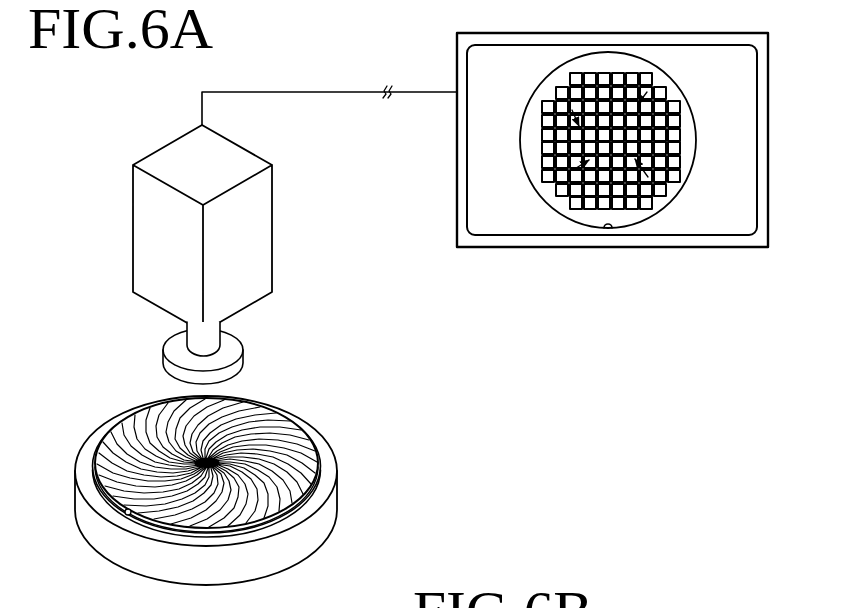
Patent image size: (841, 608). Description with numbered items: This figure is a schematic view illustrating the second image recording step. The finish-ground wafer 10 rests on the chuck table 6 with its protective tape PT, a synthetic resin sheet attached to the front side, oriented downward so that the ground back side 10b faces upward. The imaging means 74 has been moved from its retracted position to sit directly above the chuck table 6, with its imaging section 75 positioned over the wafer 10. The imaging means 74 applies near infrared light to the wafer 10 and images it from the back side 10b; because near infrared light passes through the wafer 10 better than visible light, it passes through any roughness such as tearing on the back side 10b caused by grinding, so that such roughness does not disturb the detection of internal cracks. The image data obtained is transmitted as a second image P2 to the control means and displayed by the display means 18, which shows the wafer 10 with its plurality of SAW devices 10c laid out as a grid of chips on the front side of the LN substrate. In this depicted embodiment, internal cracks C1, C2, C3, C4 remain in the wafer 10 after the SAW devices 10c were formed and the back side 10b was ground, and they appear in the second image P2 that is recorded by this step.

The chuck table 6 is at (100, 560).
The wafer 10 is at (425, 292).
The back side 10b is at (305, 477).
The SAW devices 10c is at (672, 132).
The display means 18 is at (555, 249).
The imaging means 74 is at (130, 206).
The imaging section 75 is at (158, 335).
The protective tape PT is at (253, 536).
The internal crack C1 is at (560, 95).
The internal crack C2 is at (640, 97).
The internal crack C3 is at (643, 182).
The internal crack C4 is at (568, 173).
The second image P2 is at (702, 154).